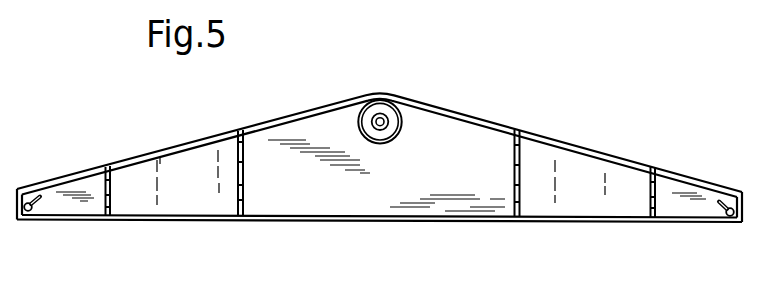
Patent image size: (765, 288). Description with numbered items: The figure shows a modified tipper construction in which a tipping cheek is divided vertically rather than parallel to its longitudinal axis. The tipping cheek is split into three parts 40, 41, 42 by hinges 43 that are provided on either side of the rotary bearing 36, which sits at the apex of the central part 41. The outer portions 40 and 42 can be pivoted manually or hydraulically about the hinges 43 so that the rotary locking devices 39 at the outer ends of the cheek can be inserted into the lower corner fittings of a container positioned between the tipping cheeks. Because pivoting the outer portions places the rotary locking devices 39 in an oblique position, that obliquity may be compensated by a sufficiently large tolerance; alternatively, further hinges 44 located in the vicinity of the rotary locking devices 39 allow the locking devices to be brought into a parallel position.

The rotary bearing 36 is at (387, 110).
The rotary locking device 39 is at (28, 218).
The outer portion of tipping cheek 40 is at (168, 205).
The middle part of tipping cheek 41 is at (369, 205).
The outer portion of tipping cheek 42 is at (565, 208).
The hinge 43 is at (245, 160).
The further hinge 44 is at (106, 178).